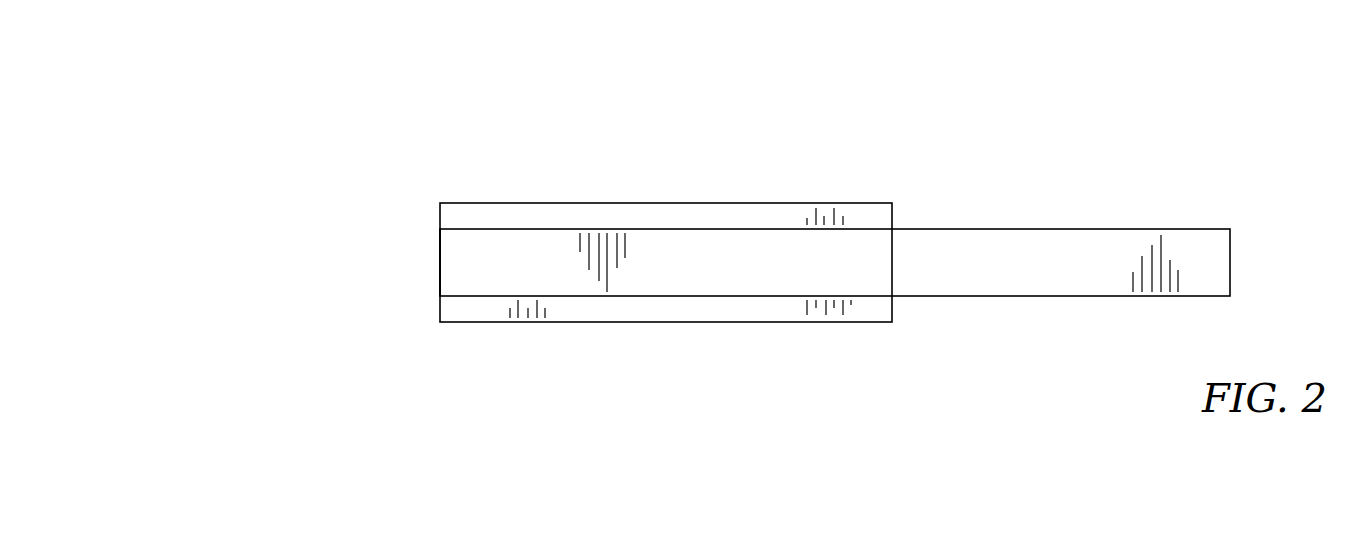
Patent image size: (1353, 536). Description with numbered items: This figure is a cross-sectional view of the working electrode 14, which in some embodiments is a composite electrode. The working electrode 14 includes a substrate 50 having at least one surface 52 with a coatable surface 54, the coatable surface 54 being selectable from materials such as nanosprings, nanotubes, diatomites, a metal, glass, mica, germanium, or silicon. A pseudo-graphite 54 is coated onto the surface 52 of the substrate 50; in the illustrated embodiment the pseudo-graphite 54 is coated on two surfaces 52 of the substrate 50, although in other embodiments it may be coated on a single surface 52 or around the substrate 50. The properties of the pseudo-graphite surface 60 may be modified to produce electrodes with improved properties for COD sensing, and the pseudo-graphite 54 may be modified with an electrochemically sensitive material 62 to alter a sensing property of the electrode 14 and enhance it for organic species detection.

The working electrode 14 is at (367, 180).
The substrate 50 is at (1036, 278).
The surface 52 is at (452, 275).
The coatable surface 54 is at (493, 228).
The pseudo-graphite surface 60 is at (558, 218).
The electrochemically sensitive material 62 is at (748, 220).